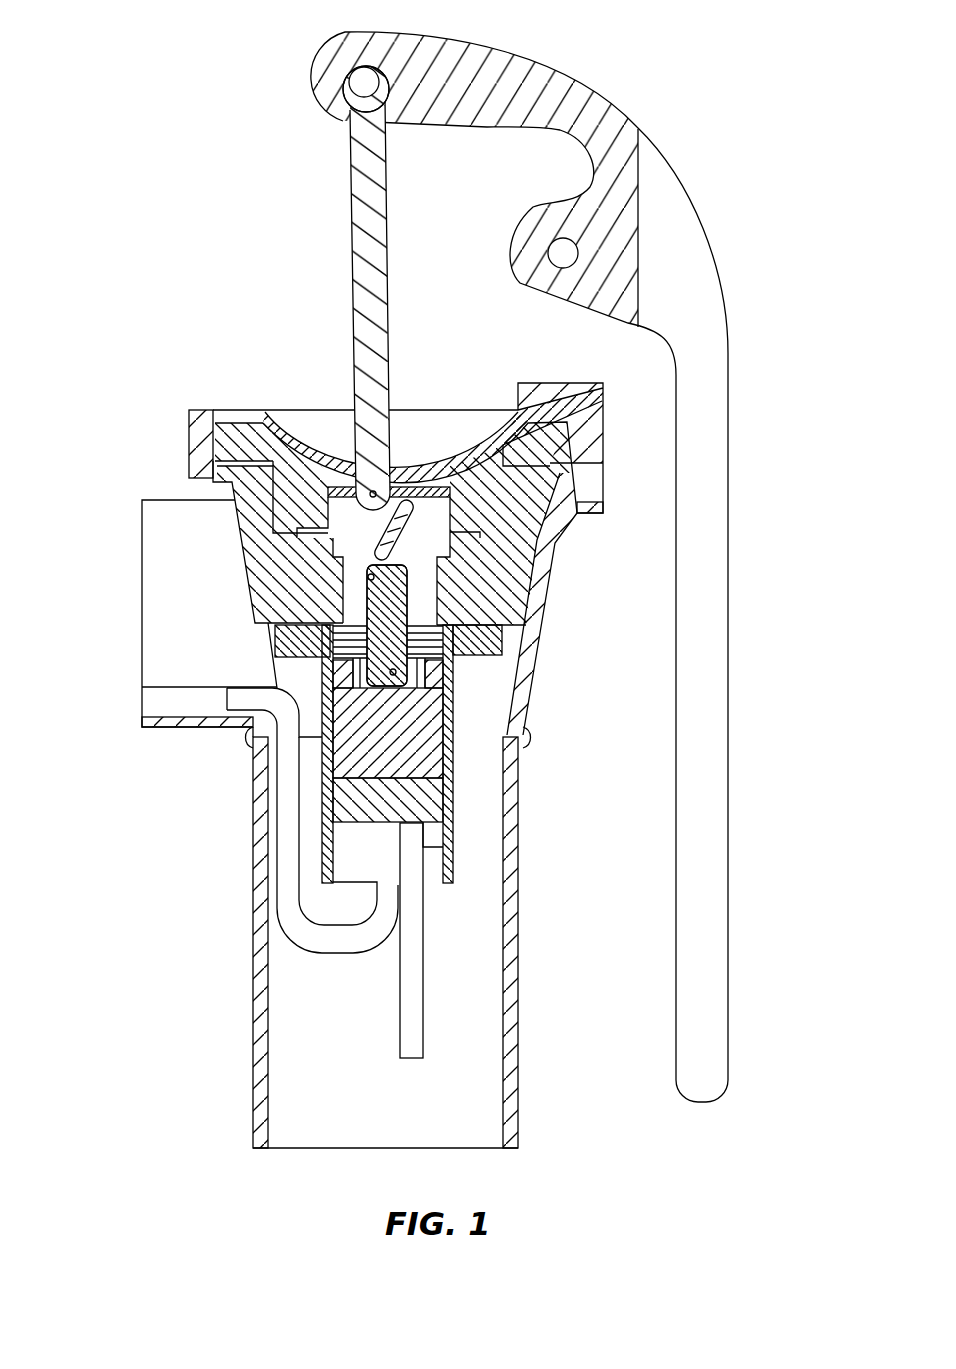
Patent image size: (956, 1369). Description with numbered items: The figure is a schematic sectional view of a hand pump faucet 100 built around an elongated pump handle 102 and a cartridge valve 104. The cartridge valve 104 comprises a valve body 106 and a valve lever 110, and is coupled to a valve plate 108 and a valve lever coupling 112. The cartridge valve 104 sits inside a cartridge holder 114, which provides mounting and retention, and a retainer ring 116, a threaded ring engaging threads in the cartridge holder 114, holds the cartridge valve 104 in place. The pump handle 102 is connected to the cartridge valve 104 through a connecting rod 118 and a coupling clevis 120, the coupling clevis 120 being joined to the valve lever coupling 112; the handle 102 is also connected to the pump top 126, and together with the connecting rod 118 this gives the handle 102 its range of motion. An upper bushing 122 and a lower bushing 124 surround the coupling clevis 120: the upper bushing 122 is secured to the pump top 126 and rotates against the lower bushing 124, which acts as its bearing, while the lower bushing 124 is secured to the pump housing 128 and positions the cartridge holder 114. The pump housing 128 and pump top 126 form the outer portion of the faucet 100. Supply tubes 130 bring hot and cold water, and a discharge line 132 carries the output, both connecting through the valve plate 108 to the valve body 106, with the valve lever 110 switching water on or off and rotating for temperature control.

The hand pump faucet 100 is at (244, 150).
The pump handle 102 is at (728, 953).
The cartridge valve 104 is at (433, 745).
The valve body 106 is at (372, 737).
The valve plate 108 is at (373, 800).
The valve lever 110 is at (450, 642).
The valve lever coupling 112 is at (365, 590).
The cartridge holder 114 is at (290, 640).
The retainer ring 116 is at (447, 677).
The connecting rod 118 is at (353, 291).
The coupling clevis 120 is at (358, 524).
The upper bushing 122 is at (235, 446).
The lower bushing 124 is at (277, 578).
The pump top 126 is at (228, 410).
The pump housing 128 is at (142, 599).
The supply tubes 130 is at (415, 999).
The discharge line 132 is at (287, 875).